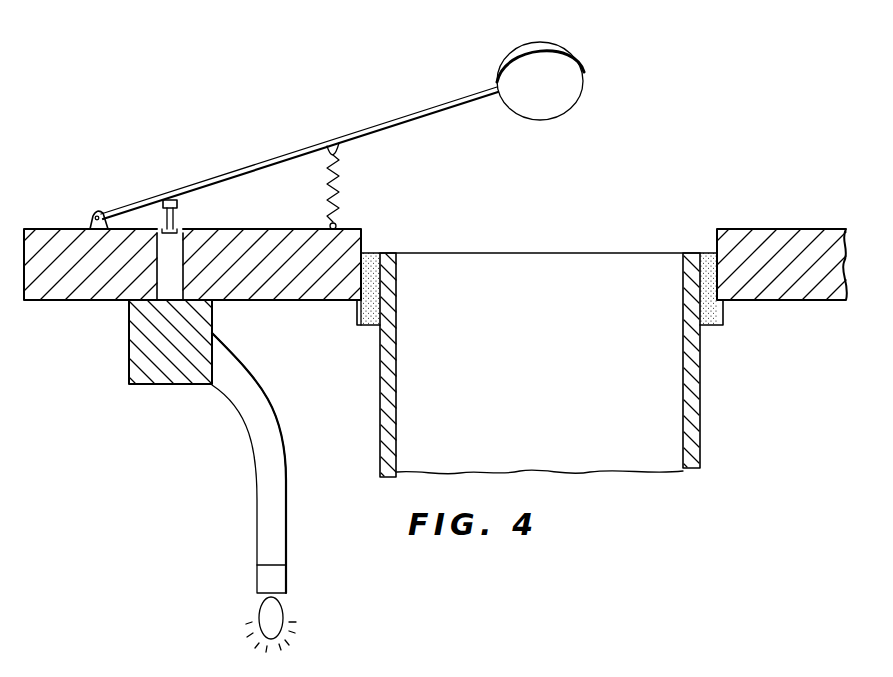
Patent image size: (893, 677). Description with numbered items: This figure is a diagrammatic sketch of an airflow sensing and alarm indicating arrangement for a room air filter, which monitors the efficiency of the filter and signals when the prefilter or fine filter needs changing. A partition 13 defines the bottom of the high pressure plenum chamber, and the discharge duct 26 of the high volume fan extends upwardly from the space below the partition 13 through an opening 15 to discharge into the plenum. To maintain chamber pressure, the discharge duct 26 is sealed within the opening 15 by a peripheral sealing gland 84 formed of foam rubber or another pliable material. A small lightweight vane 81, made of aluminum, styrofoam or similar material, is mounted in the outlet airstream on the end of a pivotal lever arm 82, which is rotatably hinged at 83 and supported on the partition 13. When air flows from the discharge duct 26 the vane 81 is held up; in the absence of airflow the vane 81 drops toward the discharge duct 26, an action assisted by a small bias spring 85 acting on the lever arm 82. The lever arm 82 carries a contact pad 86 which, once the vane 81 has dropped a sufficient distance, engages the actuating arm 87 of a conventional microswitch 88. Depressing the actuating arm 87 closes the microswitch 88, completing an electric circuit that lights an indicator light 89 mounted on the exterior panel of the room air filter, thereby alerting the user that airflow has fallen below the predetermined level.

The partition 13 is at (62, 295).
The opening 15 is at (553, 245).
The discharge duct 26 is at (380, 413).
The vane 81 is at (555, 48).
The lever arm 82 is at (259, 166).
The hinge 83 is at (97, 210).
The sealing gland 84 is at (370, 325).
The bias spring 85 is at (340, 190).
The contact pad 86 is at (172, 198).
The actuating arm 87 is at (176, 216).
The microswitch 88 is at (148, 362).
The indicator light 89 is at (284, 608).